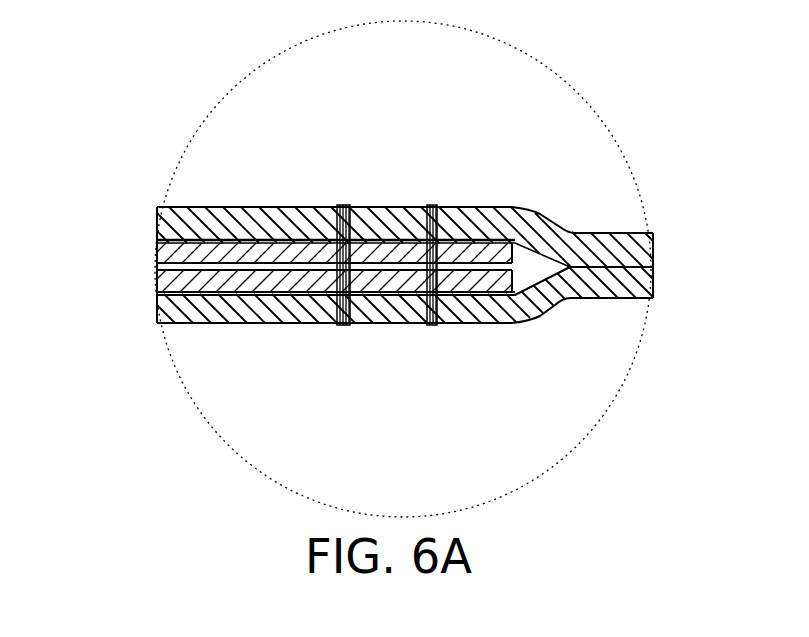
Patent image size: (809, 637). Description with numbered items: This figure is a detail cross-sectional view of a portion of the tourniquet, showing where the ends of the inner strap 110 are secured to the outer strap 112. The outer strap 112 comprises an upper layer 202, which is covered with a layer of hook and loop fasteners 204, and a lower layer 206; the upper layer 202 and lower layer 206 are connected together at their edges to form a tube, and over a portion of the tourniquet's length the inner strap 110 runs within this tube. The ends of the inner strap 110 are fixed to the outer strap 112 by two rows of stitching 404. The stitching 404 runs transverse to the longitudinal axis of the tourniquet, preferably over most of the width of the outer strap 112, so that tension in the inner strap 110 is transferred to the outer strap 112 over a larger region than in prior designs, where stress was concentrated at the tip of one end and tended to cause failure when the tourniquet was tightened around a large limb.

The layer of hook and loop fasteners 204 is at (176, 208).
The upper layer 202 is at (633, 237).
The lower layer 206 is at (612, 305).
The inner strap 110 is at (513, 256).
The outer strap 112 is at (652, 254).
The stitching 404 is at (345, 327).